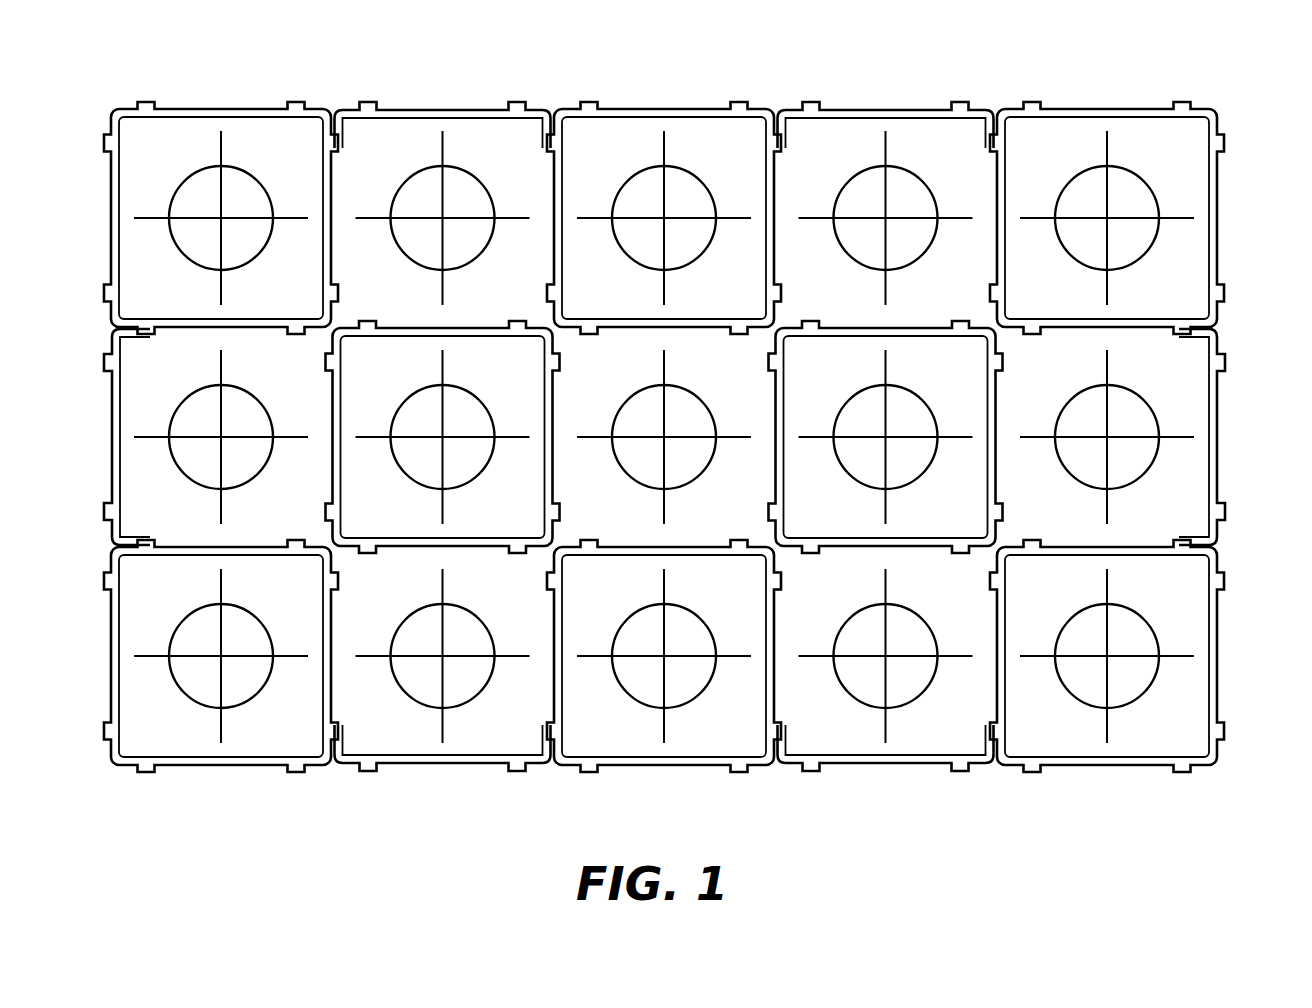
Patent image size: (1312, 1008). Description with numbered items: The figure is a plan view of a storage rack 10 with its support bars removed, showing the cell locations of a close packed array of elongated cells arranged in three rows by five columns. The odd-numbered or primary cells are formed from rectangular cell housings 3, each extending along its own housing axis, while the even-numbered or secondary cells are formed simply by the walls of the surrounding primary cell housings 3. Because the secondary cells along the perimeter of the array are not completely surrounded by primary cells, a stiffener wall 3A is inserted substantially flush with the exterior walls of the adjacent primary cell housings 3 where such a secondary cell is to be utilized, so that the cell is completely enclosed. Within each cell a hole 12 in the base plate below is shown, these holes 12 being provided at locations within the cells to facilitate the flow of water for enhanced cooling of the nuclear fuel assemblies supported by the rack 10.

The storage rack 10 is at (679, 438).
The rectangular cell housing 3 is at (243, 118).
The stiffener wall 3A is at (425, 118).
The hole 12 is at (190, 205).